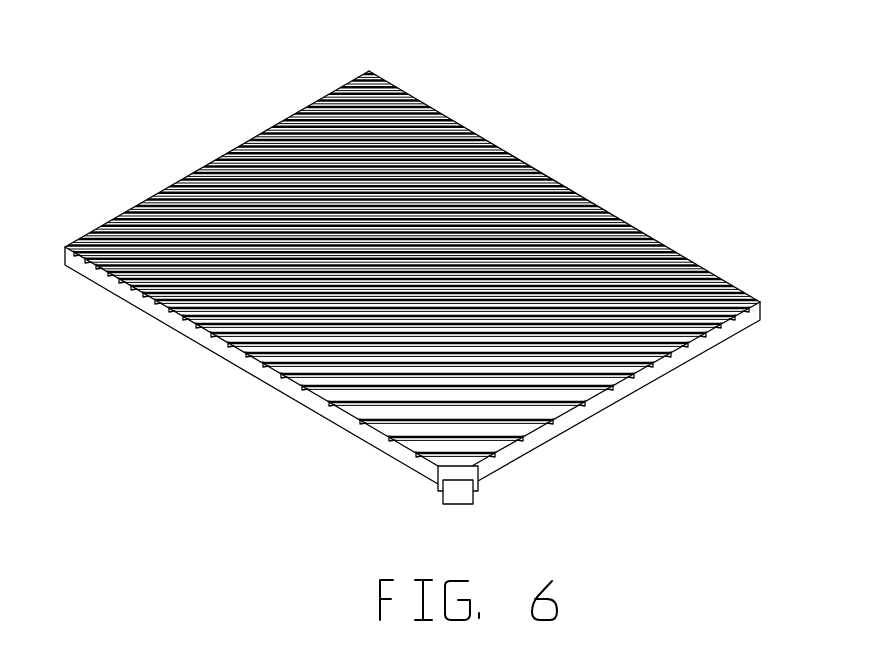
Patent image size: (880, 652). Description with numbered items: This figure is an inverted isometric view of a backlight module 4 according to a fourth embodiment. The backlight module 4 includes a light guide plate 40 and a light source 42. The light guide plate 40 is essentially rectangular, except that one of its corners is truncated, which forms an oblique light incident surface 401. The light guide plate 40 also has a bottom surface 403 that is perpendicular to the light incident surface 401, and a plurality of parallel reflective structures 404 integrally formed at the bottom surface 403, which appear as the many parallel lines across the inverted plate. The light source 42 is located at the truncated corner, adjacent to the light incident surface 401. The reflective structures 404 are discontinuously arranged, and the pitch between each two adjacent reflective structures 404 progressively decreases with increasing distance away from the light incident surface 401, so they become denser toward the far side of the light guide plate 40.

The backlight module 4 is at (420, 45).
The light guide plate 40 is at (560, 154).
The reflective structures 404 is at (633, 228).
The bottom surface 403 is at (385, 428).
The light incident surface 401 is at (470, 478).
The light source 42 is at (463, 487).